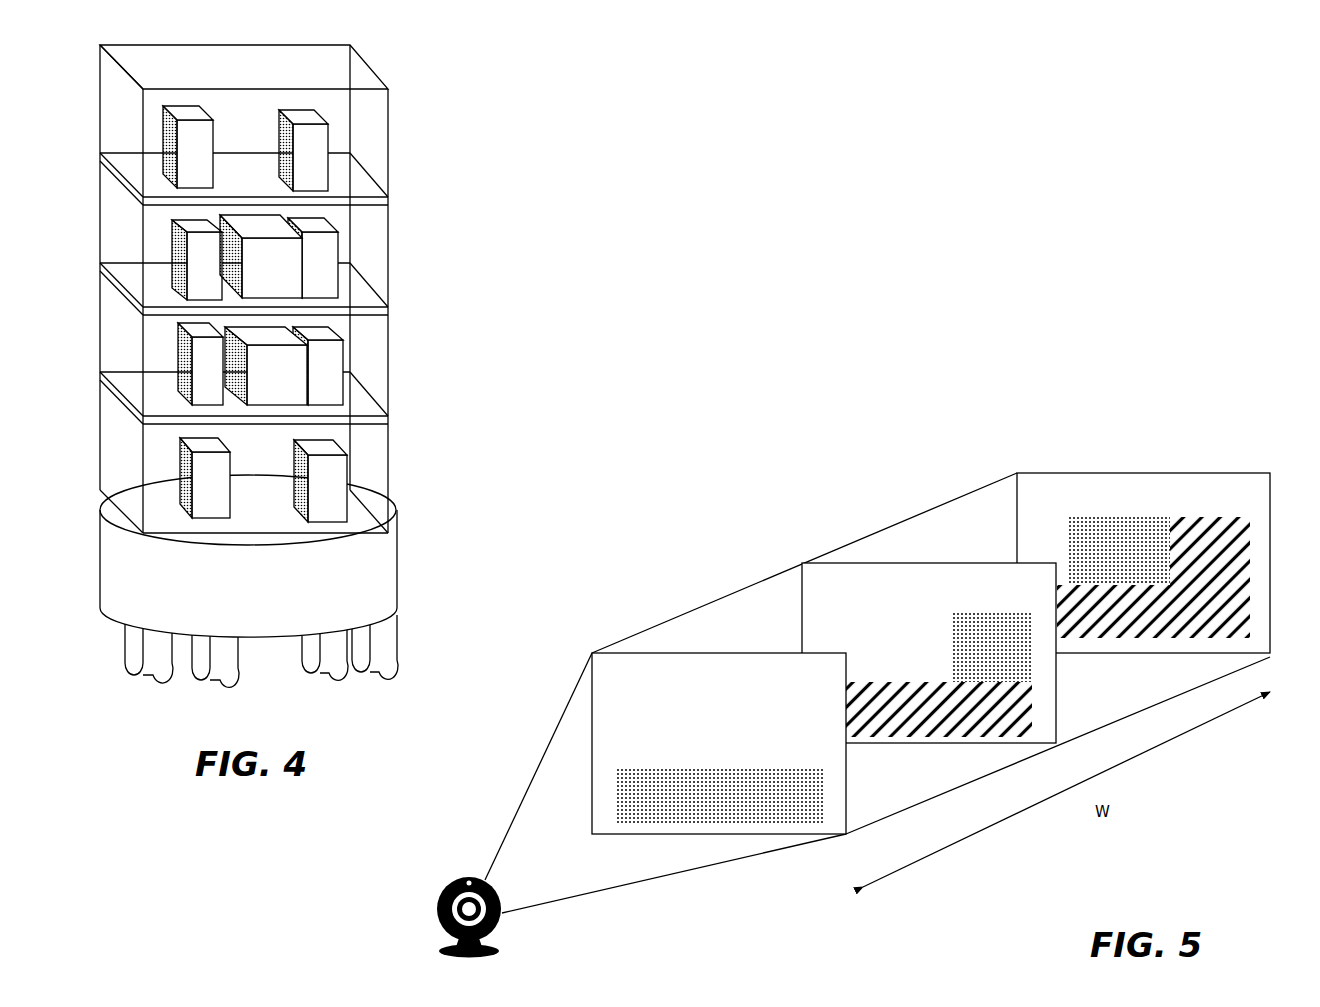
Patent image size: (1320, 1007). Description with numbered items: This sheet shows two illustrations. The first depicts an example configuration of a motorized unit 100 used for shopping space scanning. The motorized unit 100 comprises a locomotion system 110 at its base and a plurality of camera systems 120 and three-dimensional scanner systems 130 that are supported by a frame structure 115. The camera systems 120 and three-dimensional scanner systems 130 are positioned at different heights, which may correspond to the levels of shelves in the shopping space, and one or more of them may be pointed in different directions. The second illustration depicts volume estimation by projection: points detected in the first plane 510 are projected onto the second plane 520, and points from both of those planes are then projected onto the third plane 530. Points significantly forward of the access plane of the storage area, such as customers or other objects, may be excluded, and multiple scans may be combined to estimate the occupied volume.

In FIG. 4, the motorized unit 100 is at (326, 366).
In FIG. 4, the locomotion system 110 is at (388, 572).
In FIG. 4, the frame structure 115 is at (390, 263).
In FIG. 4, the camera system 120 is at (327, 477).
In FIG. 4, the 3D scanner system 130 is at (287, 382).
In FIG. 5, the first plane 510 is at (725, 653).
In FIG. 5, the second plane 520 is at (937, 563).
In FIG. 5, the third plane 530 is at (1177, 473).